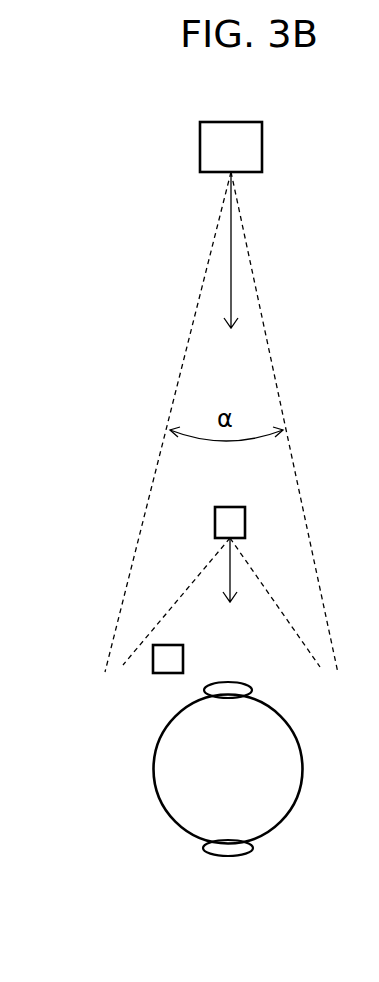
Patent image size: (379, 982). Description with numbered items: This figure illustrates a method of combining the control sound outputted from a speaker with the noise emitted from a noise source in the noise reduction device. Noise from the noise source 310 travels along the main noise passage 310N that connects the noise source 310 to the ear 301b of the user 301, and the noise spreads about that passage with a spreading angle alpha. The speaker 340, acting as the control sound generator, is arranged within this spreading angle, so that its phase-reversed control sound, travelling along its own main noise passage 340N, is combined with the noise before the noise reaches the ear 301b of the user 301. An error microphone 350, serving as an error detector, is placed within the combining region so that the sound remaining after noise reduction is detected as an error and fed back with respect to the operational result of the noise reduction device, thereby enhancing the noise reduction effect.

The noise source 310 is at (200, 140).
The main noise passage 310N is at (222, 268).
The control sound generator (speaker) 340 is at (215, 515).
The main noise passage 340N is at (226, 588).
The error detector (error microphone) 350 is at (152, 673).
The user 301 is at (172, 770).
The ear 301b is at (252, 693).